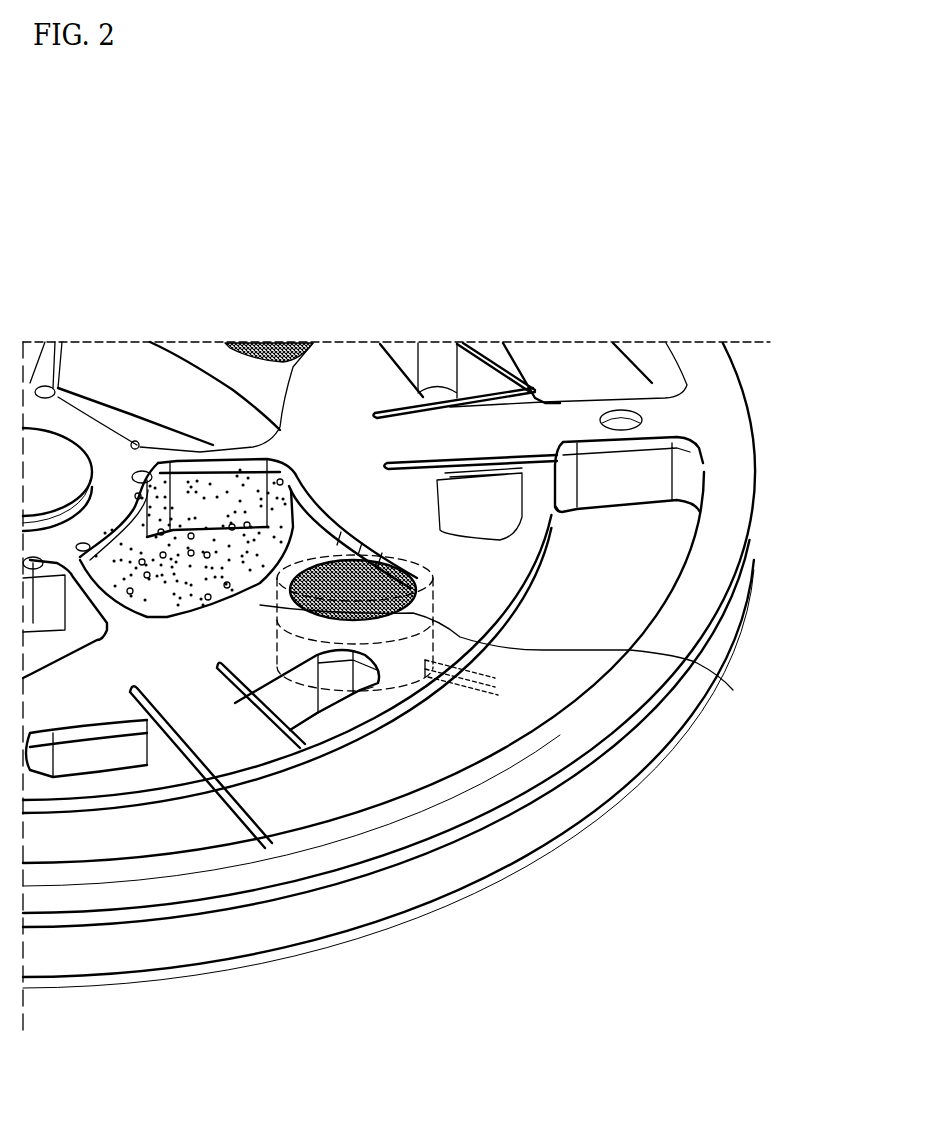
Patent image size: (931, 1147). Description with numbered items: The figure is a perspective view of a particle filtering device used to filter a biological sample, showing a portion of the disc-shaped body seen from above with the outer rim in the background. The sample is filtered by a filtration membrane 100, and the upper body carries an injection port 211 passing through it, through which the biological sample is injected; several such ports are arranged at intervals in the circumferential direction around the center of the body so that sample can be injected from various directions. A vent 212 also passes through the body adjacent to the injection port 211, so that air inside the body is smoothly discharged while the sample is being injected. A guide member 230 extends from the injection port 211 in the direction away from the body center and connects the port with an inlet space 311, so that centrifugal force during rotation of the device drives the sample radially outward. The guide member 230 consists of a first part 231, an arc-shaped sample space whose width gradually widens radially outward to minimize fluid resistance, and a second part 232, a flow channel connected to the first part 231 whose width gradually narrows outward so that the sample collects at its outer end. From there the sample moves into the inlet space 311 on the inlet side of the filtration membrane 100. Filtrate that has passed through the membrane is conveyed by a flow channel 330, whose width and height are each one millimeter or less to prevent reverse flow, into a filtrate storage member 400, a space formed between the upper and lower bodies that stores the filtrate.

The filtration membrane 100 is at (417, 573).
The injection port 211 is at (138, 476).
The vent 212 is at (137, 441).
The guide member 230 is at (462, 292).
The first part 231 is at (255, 487).
The second part 232 is at (307, 540).
The inlet space 311 is at (640, 652).
The flow channel 330 is at (377, 540).
The filtrate storage member 400 is at (563, 677).